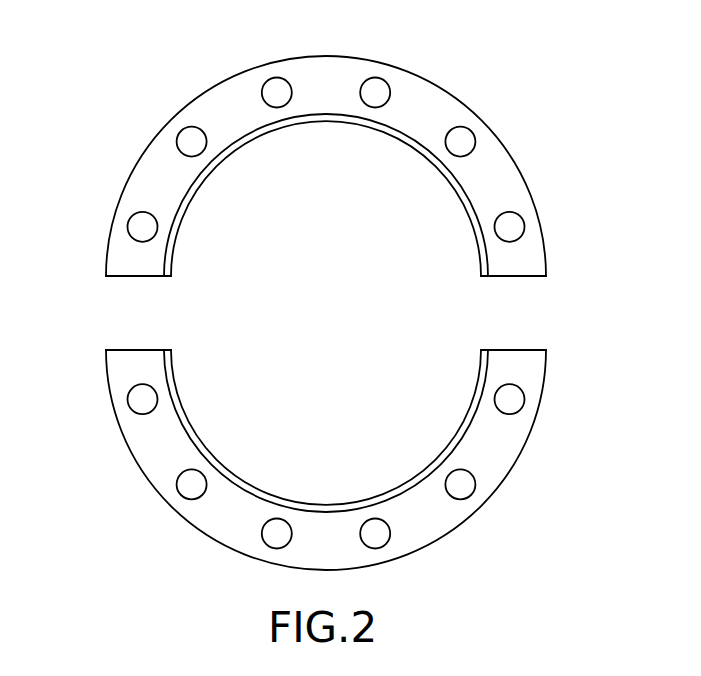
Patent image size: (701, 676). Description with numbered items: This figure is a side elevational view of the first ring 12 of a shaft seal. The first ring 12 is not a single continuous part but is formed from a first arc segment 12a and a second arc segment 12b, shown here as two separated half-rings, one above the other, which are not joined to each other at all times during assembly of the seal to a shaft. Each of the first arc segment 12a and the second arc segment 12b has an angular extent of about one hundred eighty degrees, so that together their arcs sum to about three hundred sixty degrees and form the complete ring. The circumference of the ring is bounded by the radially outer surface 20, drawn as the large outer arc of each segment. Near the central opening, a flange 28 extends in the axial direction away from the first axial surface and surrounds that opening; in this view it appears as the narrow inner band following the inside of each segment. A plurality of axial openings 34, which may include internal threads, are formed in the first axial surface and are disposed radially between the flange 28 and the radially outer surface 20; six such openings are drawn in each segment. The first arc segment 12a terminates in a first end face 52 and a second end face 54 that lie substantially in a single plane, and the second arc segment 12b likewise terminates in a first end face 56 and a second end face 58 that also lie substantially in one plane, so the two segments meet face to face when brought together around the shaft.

The first ring 12 is at (565, 126).
The first arc segment 12a is at (433, 82).
The second arc segment 12b is at (447, 532).
The radially outer surface 20 is at (292, 58).
The flange 28 is at (323, 122).
The axial openings 34 is at (181, 131).
The first end face 52 is at (147, 276).
The second end face 54 is at (520, 276).
The first end face 56 is at (125, 348).
The second end face 58 is at (499, 349).